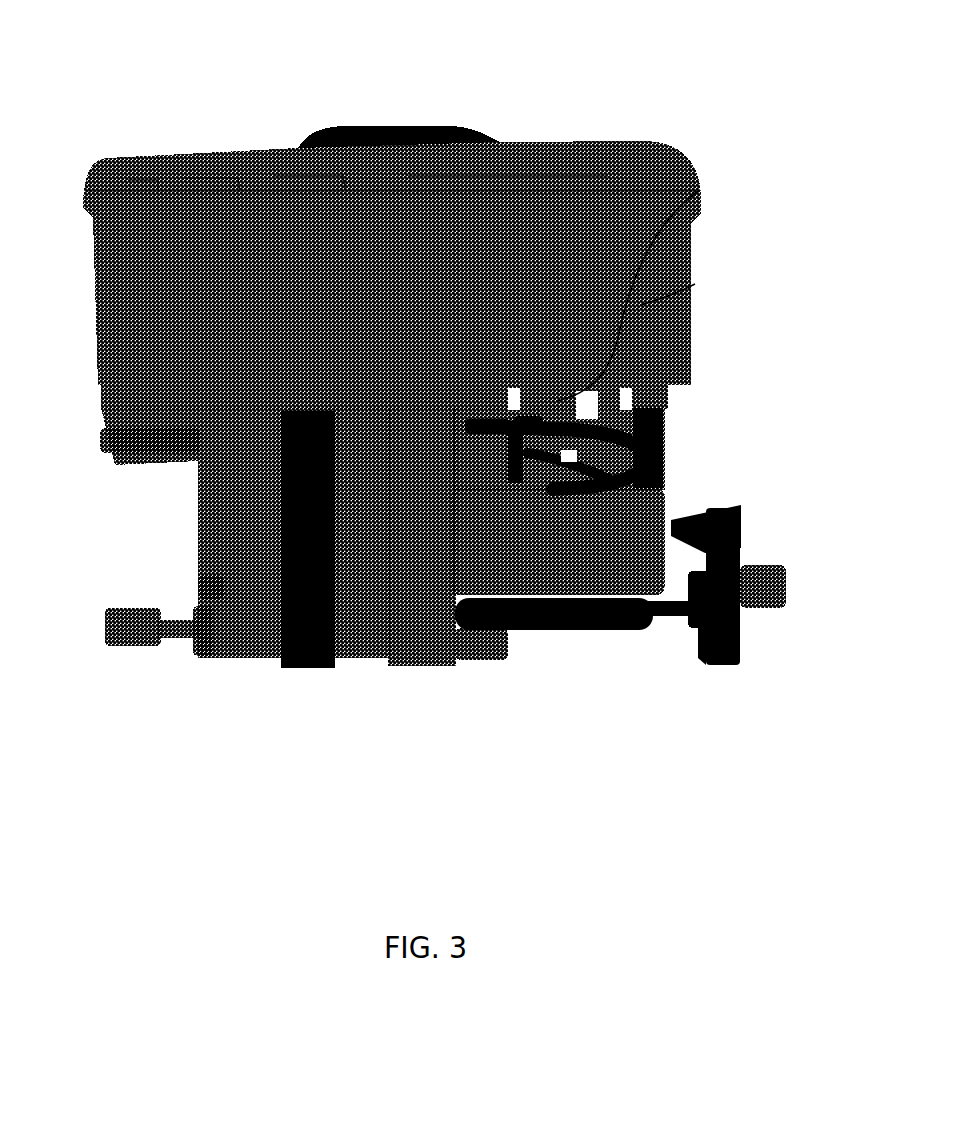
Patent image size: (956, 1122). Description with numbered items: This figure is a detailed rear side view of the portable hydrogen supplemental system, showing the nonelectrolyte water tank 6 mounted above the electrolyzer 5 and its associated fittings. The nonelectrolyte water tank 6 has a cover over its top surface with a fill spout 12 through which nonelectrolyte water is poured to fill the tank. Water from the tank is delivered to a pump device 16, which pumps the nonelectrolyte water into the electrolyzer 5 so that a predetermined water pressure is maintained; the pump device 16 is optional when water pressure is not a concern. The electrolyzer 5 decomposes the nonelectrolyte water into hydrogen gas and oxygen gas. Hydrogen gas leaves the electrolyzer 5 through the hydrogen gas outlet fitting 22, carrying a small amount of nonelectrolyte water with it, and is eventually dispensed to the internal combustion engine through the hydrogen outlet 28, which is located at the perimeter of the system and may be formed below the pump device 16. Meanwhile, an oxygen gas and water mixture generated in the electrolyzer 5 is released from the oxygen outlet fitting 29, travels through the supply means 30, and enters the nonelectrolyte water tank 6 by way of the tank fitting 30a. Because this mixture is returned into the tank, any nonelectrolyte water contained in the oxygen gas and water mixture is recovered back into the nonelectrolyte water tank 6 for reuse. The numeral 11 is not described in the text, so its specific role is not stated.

The electrolyzer 5 is at (220, 543).
The nonelectrolyte water tank 6 is at (687, 276).
The reservoir tank 11 is at (537, 135).
The fill spout 12 is at (385, 118).
The pump device 16 is at (647, 500).
The hydrogen gas outlet fitting 22 is at (507, 627).
The hydrogen outlet 28 is at (733, 545).
The oxygen outlet fitting 29 is at (690, 183).
The supply means 30 is at (660, 435).
The tank fitting 30a is at (520, 413).